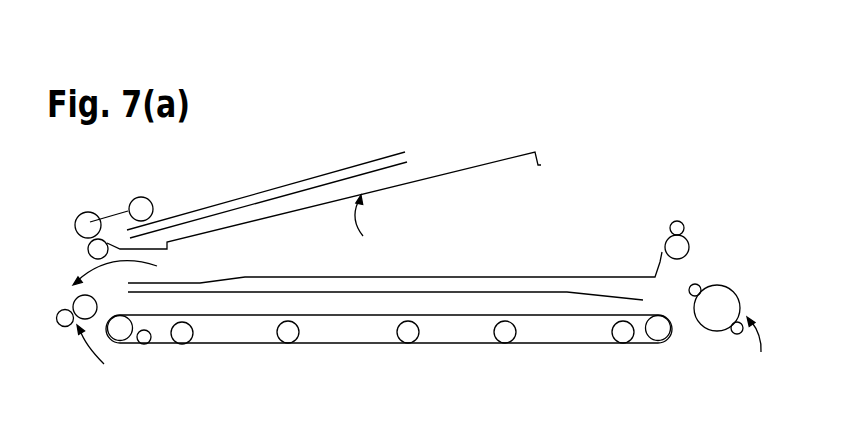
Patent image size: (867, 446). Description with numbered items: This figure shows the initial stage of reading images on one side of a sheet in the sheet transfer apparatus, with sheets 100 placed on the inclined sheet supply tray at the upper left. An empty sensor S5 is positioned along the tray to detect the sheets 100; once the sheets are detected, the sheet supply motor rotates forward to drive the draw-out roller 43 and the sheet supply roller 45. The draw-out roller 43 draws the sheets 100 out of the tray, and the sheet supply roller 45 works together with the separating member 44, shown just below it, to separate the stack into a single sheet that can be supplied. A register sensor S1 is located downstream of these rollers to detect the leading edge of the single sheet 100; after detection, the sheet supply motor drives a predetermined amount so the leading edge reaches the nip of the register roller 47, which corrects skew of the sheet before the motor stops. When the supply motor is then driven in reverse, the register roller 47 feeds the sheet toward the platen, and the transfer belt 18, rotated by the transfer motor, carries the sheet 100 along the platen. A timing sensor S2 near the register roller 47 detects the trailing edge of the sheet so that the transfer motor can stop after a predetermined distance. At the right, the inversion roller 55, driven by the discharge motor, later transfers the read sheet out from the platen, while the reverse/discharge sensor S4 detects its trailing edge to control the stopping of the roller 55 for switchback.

The sheet 100 is at (282, 184).
The sheet supply roller 45 is at (80, 223).
The draw-out roller 43 is at (134, 210).
The separating member 44 is at (93, 251).
The register roller 47 is at (62, 322).
The inversion roller 55 is at (723, 298).
The transfer belt 18 is at (463, 344).
The register sensor S1 is at (131, 270).
The timing sensor S2 is at (105, 355).
The reverse/discharge sensor S4 is at (759, 348).
The empty sensor S5 is at (371, 224).